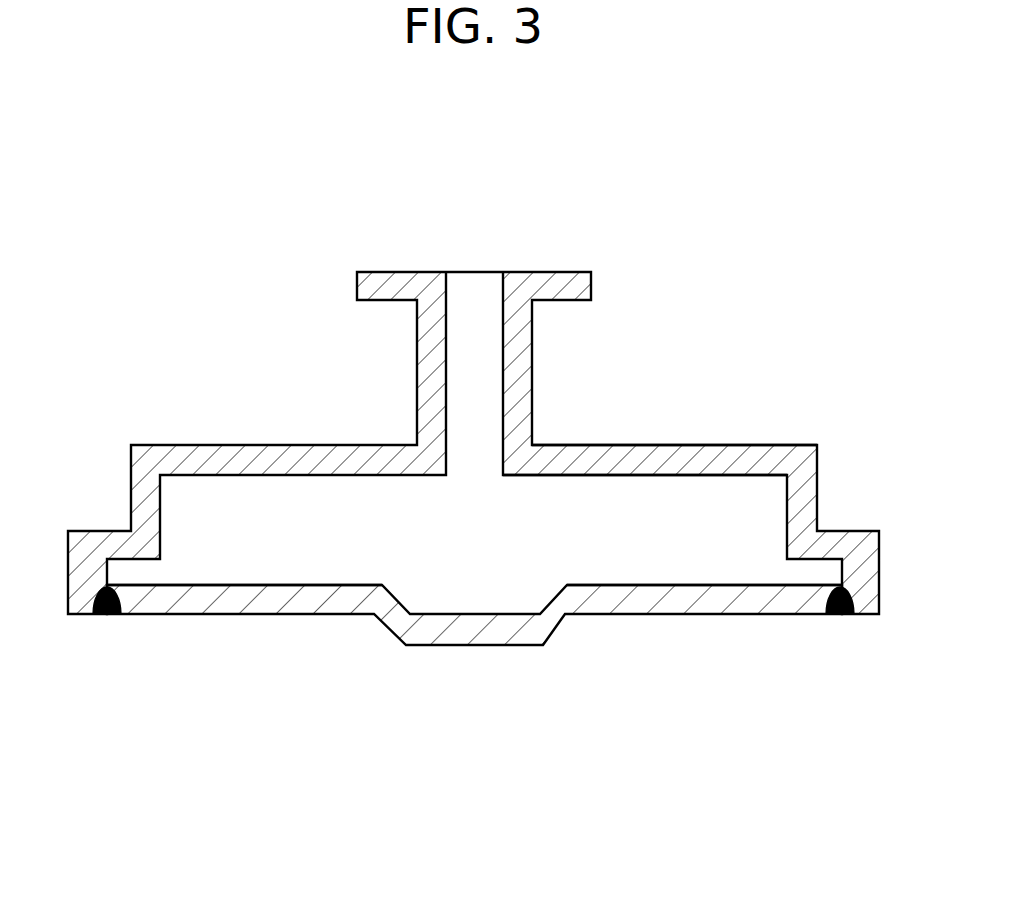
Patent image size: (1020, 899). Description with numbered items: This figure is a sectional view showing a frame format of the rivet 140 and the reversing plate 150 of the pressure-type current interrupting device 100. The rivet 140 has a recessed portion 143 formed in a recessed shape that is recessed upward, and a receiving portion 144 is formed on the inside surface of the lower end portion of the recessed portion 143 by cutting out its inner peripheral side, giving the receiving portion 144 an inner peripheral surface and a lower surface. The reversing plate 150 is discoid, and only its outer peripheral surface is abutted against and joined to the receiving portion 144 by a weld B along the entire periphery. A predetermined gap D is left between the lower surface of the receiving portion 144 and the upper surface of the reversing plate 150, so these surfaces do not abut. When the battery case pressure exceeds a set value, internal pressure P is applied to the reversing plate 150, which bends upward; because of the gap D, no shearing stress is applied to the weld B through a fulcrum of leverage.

The pressure-type current interrupting device 100 is at (470, 509).
The rivet 140 is at (473, 443).
The recessed portion 143 is at (525, 460).
The receiving portion 144 is at (137, 570).
The reversing plate 150 is at (630, 635).
The weld B is at (103, 614).
The predetermined gap D is at (209, 525).
The internal pressure P is at (287, 732).